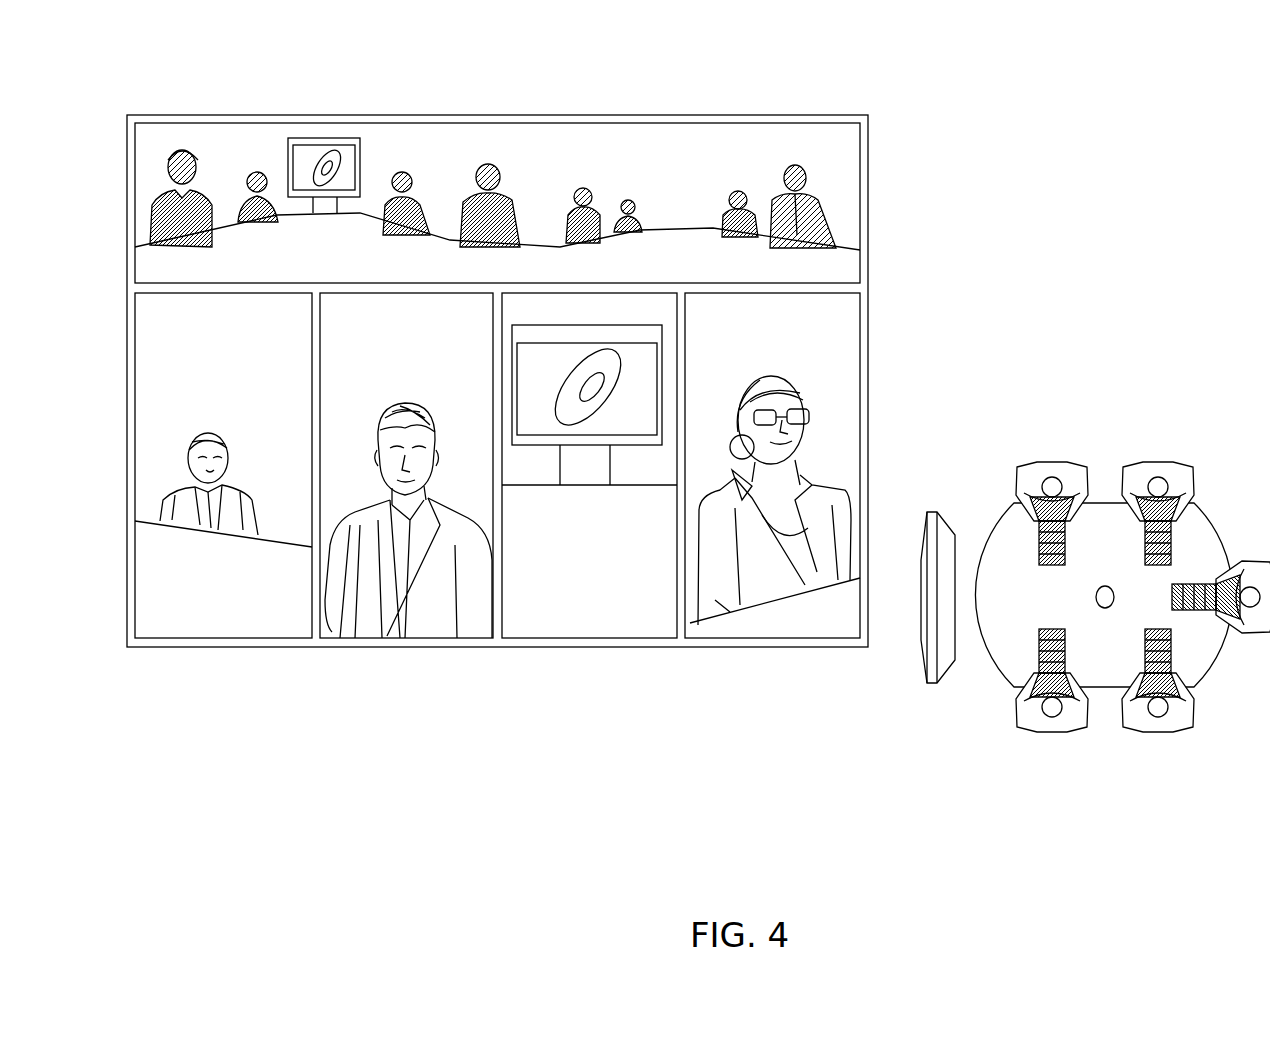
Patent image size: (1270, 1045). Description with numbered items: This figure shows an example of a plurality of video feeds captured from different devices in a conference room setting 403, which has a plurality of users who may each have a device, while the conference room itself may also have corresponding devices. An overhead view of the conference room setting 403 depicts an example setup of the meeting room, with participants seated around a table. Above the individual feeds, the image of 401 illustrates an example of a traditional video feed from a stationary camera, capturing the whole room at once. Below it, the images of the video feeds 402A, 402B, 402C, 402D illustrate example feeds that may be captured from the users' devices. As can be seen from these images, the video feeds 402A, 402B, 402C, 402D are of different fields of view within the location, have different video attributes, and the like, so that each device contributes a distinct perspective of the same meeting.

The traditional video feed image 401 is at (328, 120).
The video feed 402A is at (232, 648).
The video feed 402B is at (432, 648).
The video feed 402C is at (645, 648).
The video feed 402D is at (802, 648).
The conference room setting 403 is at (1023, 740).